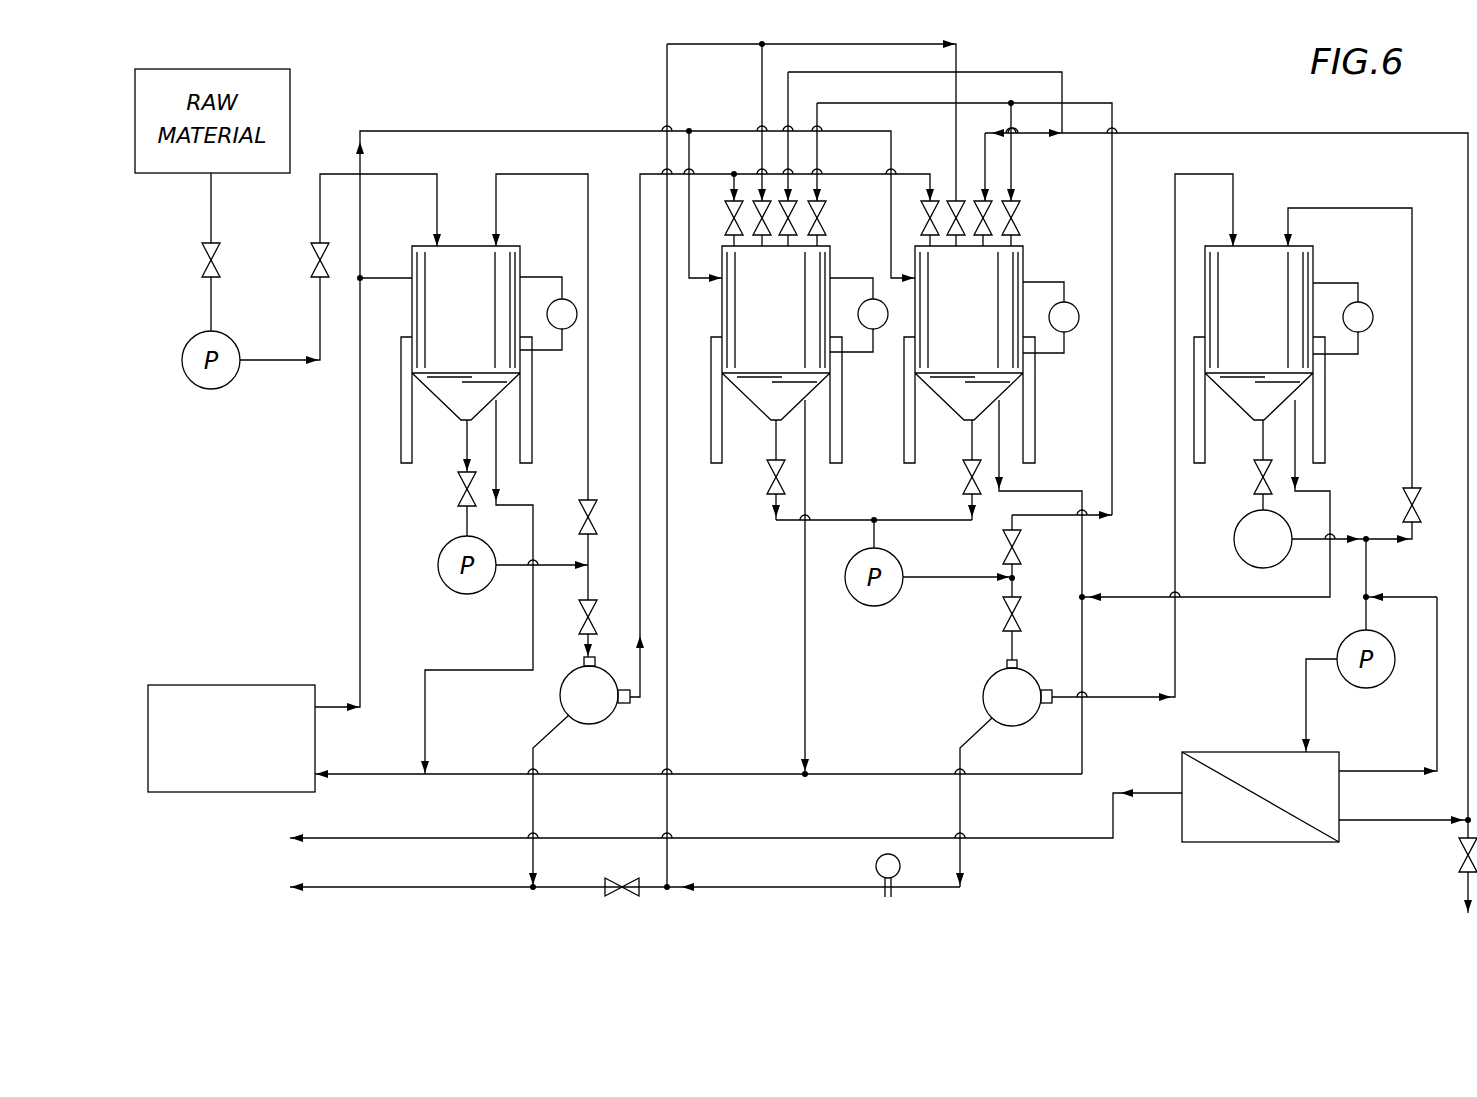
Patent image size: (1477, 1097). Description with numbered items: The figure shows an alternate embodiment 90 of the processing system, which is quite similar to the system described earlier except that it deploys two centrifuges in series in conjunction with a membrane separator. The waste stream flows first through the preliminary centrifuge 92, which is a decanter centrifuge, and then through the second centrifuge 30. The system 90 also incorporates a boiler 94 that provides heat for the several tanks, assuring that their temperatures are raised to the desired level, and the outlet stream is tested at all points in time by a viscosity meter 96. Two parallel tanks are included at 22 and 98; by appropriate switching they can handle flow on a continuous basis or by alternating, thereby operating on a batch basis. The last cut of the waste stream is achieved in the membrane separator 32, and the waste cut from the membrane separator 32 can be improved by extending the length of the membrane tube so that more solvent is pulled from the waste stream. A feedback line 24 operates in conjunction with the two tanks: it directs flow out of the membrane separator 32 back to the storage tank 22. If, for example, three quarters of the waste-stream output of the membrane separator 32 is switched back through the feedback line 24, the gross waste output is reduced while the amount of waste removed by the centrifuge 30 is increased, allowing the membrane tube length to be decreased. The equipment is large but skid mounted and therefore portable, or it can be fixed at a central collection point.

The embodiment 90 is at (473, 77).
The storage tank 22 is at (757, 412).
The parallel tank 98 is at (953, 412).
The feedback line 24 is at (1466, 557).
The centrifuge 30 is at (1030, 724).
The membrane separator 32 is at (1280, 843).
The preliminary centrifuge 92 is at (605, 721).
The boiler 94 is at (213, 685).
The viscosity meter 96 is at (875, 864).